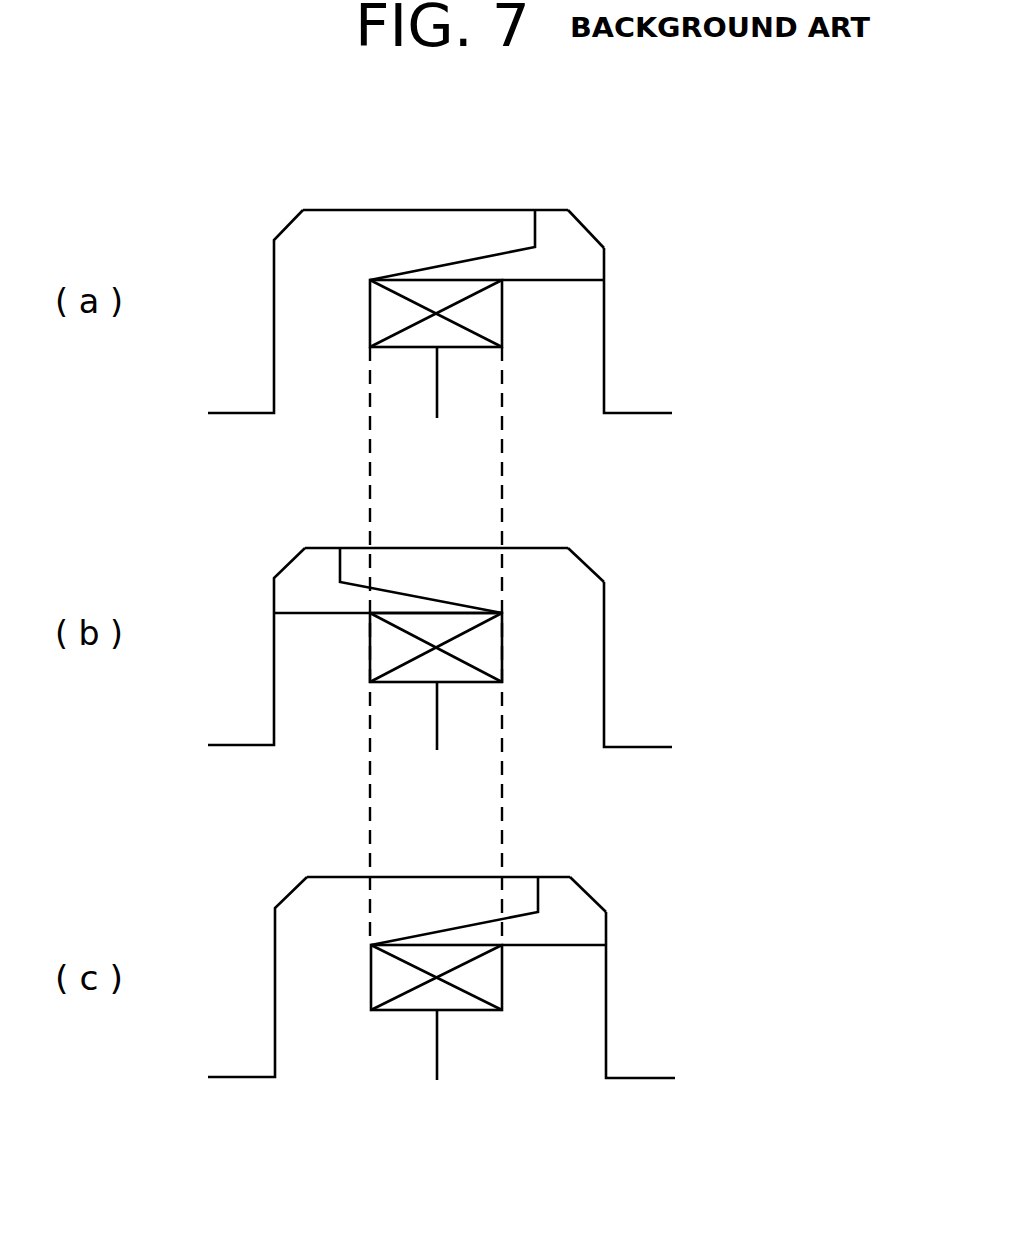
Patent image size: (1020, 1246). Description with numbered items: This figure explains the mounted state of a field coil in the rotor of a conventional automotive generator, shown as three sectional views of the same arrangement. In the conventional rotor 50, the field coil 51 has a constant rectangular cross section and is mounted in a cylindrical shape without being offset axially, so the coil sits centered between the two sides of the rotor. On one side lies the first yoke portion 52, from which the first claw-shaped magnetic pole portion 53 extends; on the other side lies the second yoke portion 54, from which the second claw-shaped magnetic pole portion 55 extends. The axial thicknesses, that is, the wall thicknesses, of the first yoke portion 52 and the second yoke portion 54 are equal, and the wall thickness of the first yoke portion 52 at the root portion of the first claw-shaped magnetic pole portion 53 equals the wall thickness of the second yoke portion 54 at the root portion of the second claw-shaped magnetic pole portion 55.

The conventional rotor 50 is at (634, 166).
The field coil 51 is at (442, 293).
The first yoke portion 52 is at (327, 977).
The first claw-shaped magnetic pole portion 53 is at (382, 238).
The second yoke portion 54 is at (565, 323).
The second claw-shaped magnetic pole portion 55 is at (557, 248).